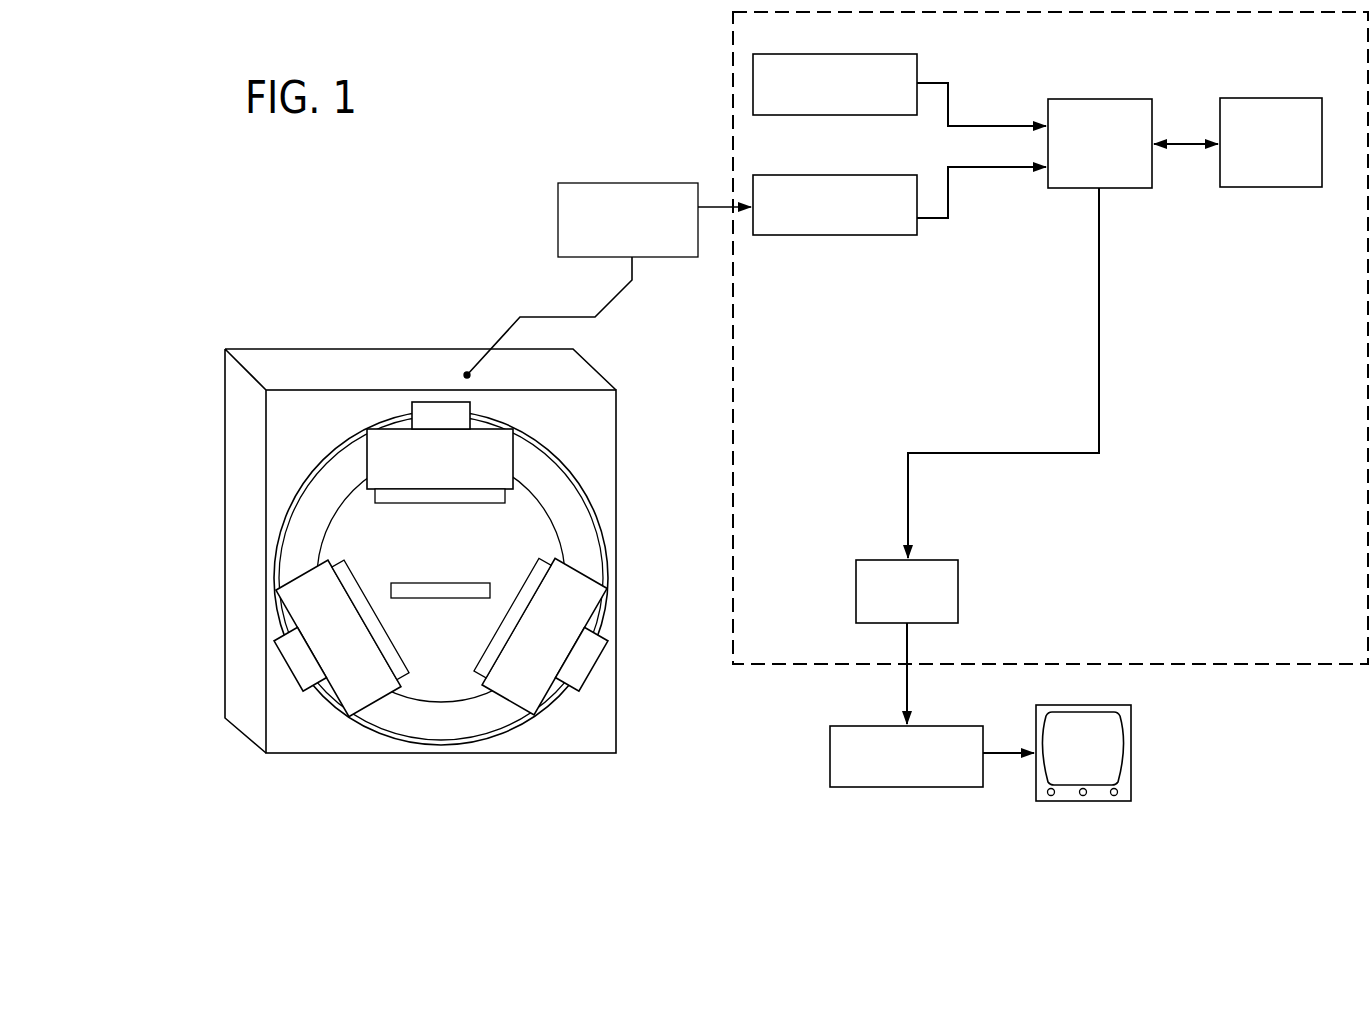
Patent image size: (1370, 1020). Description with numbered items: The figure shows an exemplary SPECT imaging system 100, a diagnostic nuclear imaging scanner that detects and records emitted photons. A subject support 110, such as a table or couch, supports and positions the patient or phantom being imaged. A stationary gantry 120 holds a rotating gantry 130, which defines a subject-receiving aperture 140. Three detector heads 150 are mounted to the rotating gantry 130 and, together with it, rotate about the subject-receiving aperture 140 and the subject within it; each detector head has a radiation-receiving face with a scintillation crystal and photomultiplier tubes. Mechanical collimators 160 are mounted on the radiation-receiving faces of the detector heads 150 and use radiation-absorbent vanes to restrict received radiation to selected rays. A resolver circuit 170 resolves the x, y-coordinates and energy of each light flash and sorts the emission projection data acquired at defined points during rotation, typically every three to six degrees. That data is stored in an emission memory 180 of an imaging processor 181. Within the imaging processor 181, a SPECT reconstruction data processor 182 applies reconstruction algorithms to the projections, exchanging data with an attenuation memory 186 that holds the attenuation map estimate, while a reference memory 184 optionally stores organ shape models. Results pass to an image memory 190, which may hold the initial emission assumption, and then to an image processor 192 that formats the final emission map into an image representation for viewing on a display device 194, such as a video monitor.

The SPECT imaging system 100 is at (410, 588).
The subject support 110 is at (427, 600).
The stationary gantry 120 is at (252, 490).
The rotating gantry 130 is at (457, 722).
The subject-receiving aperture 140 is at (441, 562).
The detector heads 150 is at (383, 452).
The mechanical collimators 160 is at (473, 503).
The resolver circuit 170 is at (608, 183).
The emission memory 180 is at (845, 175).
The imaging processor 181 is at (1242, 664).
The SPECT reconstruction data processor 182 is at (1082, 188).
The reference memory 184 is at (919, 68).
The attenuation memory 186 is at (1245, 188).
The image memory 190 is at (856, 587).
The image processor 192 is at (872, 726).
The display device 194 is at (1133, 751).